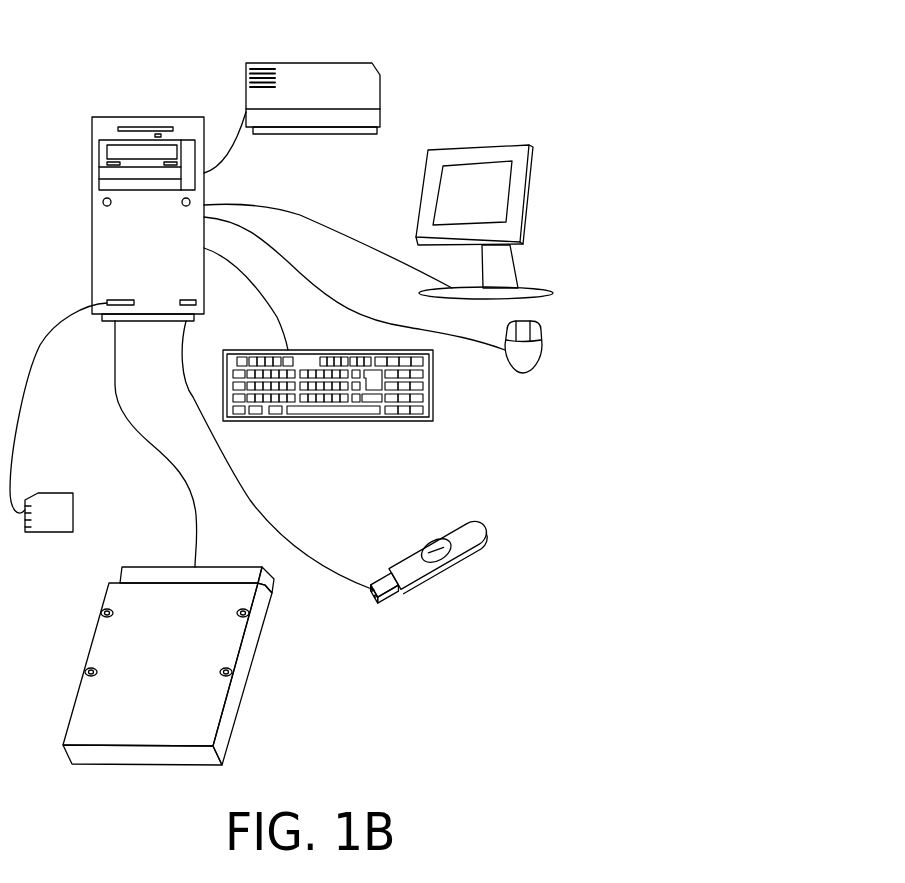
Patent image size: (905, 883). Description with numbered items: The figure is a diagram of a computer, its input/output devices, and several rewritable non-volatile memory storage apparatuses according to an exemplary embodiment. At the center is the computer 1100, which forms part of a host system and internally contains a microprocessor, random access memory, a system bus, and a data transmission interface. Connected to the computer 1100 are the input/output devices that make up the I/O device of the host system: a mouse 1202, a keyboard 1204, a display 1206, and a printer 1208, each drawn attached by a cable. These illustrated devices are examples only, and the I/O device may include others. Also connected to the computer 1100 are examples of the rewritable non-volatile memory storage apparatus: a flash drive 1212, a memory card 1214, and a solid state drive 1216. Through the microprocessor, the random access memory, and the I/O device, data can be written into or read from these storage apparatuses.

The computer 1100 is at (150, 117).
The printer 1208 is at (308, 63).
The display 1206 is at (487, 143).
The mouse 1202 is at (542, 352).
The keyboard 1204 is at (433, 398).
The memory card 1214 is at (73, 505).
The solid state drive (SSD) 1216 is at (218, 556).
The flash drive 1212 is at (418, 552).